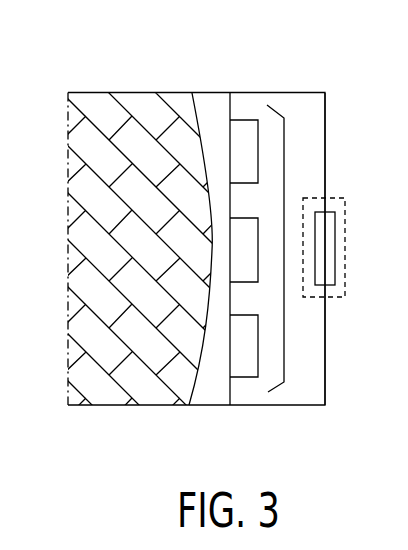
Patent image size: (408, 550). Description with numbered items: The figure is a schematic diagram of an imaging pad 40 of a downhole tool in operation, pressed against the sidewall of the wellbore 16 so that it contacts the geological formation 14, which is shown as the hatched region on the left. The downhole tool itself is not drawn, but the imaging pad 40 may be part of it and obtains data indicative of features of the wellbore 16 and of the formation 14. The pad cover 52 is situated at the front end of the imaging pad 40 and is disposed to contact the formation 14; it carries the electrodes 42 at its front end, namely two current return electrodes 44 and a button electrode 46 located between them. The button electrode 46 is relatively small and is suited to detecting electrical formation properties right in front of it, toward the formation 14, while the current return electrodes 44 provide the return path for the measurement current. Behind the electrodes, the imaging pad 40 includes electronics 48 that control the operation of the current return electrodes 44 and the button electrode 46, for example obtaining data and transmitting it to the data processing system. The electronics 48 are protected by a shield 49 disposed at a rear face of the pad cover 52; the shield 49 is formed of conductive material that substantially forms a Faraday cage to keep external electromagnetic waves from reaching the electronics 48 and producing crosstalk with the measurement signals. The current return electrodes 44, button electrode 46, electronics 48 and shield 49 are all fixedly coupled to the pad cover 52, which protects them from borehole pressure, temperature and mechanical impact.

The formation 14 is at (131, 140).
The wellbore 16 is at (387, 150).
The imaging pad 40 is at (327, 127).
The electrodes 42 is at (285, 320).
The current return electrodes 44 is at (240, 137).
The button electrode 46 is at (258, 250).
The electronics 48 is at (336, 240).
The shield 49 is at (340, 298).
The pad cover 52 is at (298, 115).